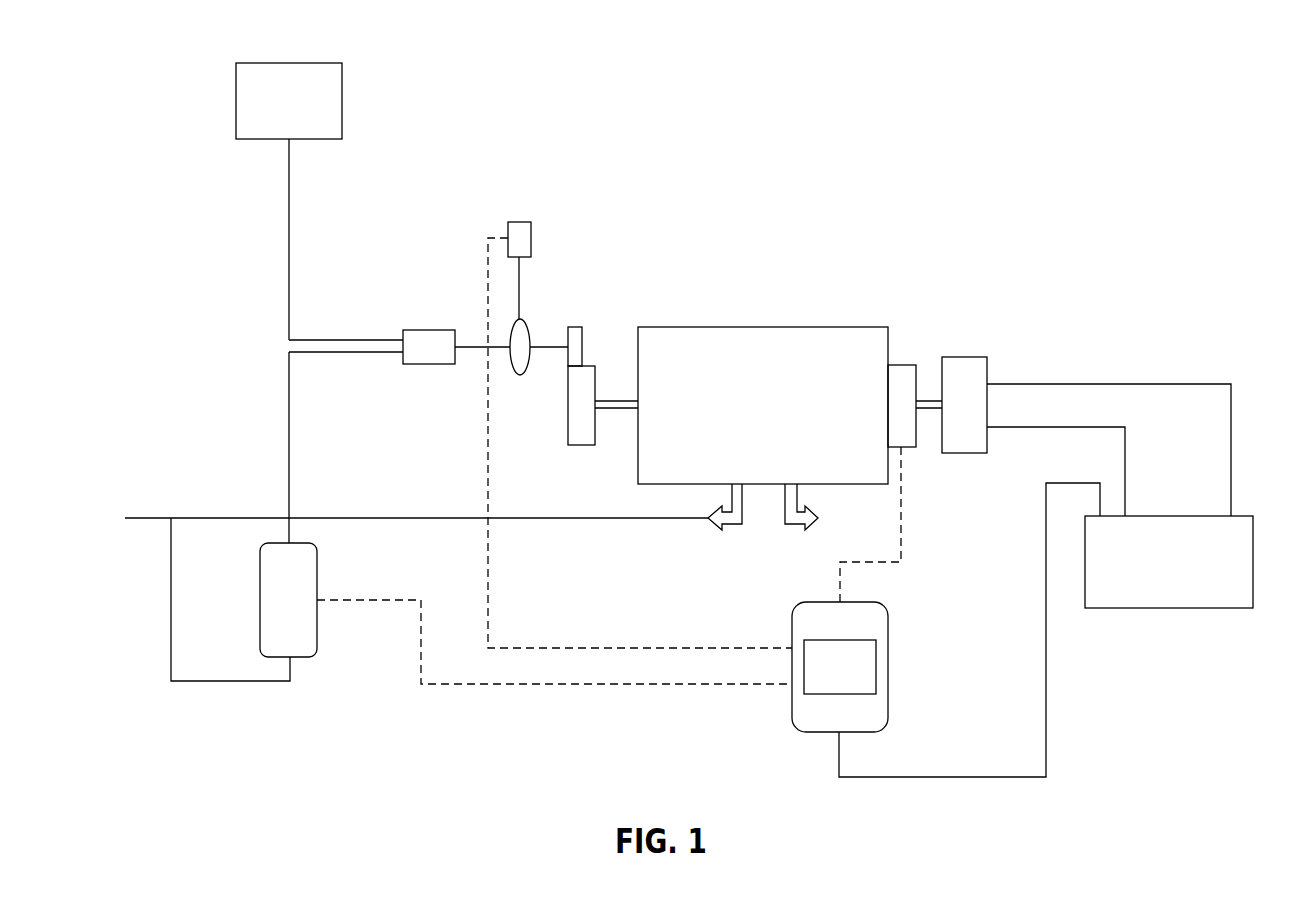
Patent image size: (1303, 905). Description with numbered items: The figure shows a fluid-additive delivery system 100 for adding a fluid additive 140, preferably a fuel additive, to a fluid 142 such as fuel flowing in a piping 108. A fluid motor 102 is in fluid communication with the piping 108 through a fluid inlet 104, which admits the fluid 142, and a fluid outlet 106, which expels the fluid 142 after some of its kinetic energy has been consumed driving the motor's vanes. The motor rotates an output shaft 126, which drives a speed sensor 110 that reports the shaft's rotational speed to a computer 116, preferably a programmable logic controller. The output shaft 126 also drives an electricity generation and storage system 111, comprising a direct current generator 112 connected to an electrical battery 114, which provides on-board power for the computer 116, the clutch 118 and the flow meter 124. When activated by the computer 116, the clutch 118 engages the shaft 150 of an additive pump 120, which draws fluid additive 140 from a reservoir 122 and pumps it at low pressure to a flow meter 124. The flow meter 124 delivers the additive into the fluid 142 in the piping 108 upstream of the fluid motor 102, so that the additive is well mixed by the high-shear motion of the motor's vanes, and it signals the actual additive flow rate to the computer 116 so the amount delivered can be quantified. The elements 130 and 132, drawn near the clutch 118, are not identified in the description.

The fluid-additive delivery system 100 is at (1103, 110).
The fluid motor 102 is at (866, 327).
The fluid inlet 104 is at (682, 520).
The fluid outlet 106 is at (850, 516).
The piping 108 is at (415, 518).
The speed sensor 110 is at (900, 365).
The electricity generation and storage system 111 is at (1096, 472).
The direct current generator 112 is at (972, 357).
The electrical battery 114 is at (1228, 608).
The computer 116 is at (888, 668).
The clutch 118 is at (522, 376).
The additive pump 120 is at (415, 330).
The reservoir 122 is at (256, 185).
The flow meter 124 is at (300, 657).
The output shaft 126 is at (627, 410).
The coupling 130 is at (575, 327).
The valve actuator 132 is at (525, 222).
The fluid additive 140 is at (262, 63).
The fluid 142 is at (148, 518).
The shaft 150 is at (470, 352).